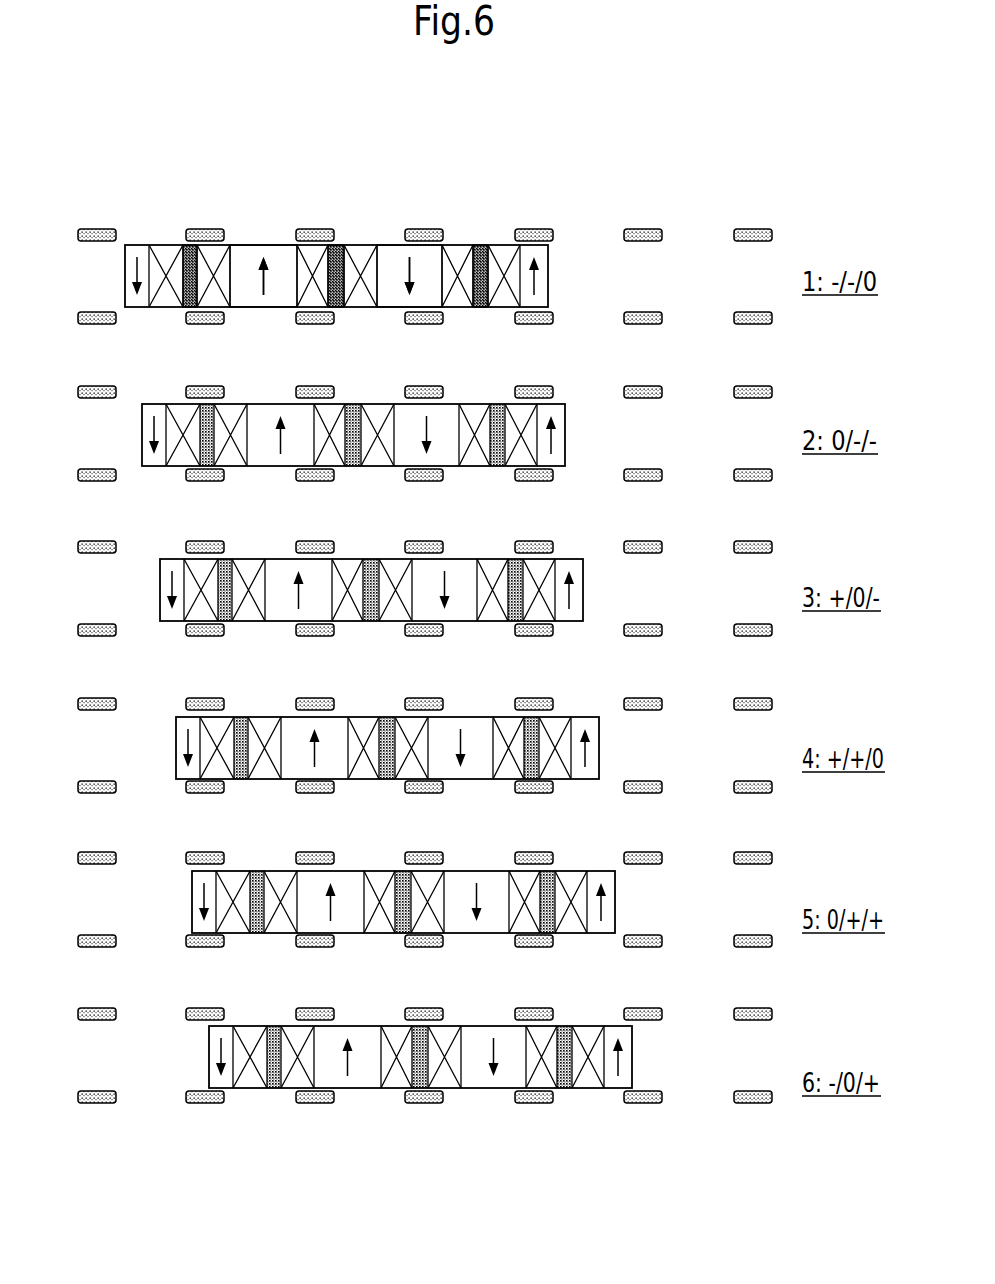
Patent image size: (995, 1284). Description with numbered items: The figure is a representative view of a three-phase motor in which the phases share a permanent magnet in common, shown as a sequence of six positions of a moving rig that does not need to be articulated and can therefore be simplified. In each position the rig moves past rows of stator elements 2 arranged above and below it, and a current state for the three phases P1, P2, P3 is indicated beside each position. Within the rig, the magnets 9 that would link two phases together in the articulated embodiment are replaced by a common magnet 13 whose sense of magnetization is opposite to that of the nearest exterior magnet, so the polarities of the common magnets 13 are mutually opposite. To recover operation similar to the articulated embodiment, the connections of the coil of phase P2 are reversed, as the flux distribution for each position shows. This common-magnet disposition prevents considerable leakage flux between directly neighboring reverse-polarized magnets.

The coil 2 is at (106, 229).
The magnet 9 is at (125, 297).
The common magnet 13 is at (242, 270).
The pole position 1 P1 is at (193, 242).
The phase P2 is at (343, 243).
The pole position 3 P3 is at (483, 242).